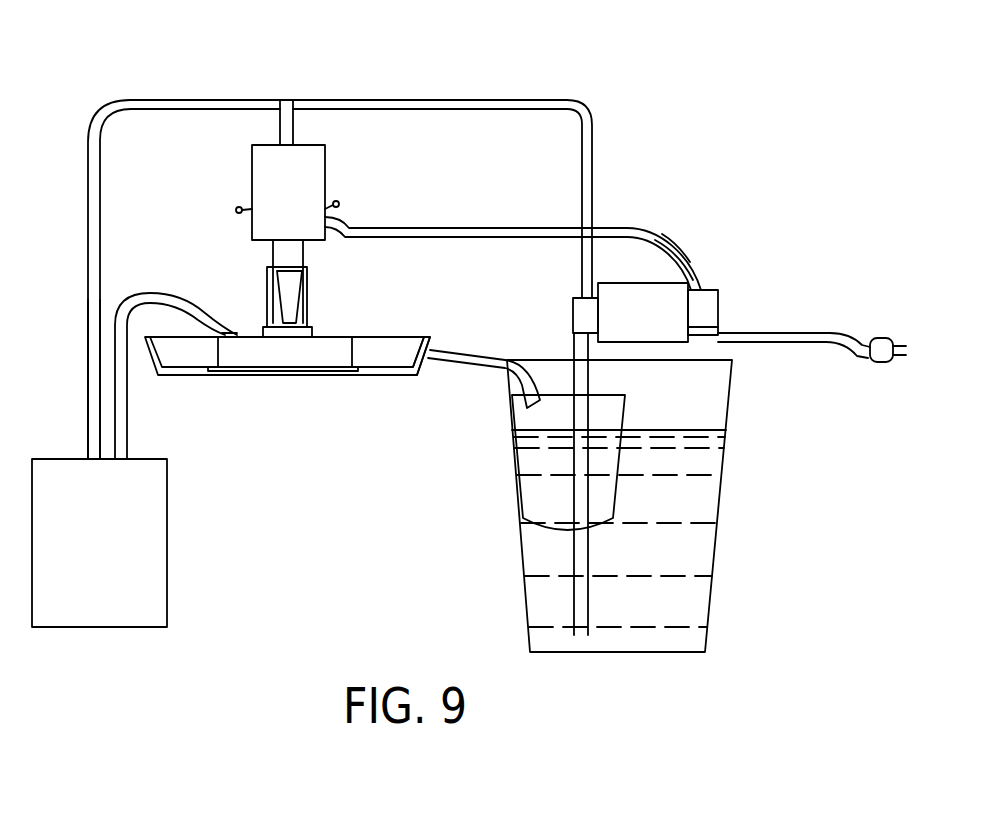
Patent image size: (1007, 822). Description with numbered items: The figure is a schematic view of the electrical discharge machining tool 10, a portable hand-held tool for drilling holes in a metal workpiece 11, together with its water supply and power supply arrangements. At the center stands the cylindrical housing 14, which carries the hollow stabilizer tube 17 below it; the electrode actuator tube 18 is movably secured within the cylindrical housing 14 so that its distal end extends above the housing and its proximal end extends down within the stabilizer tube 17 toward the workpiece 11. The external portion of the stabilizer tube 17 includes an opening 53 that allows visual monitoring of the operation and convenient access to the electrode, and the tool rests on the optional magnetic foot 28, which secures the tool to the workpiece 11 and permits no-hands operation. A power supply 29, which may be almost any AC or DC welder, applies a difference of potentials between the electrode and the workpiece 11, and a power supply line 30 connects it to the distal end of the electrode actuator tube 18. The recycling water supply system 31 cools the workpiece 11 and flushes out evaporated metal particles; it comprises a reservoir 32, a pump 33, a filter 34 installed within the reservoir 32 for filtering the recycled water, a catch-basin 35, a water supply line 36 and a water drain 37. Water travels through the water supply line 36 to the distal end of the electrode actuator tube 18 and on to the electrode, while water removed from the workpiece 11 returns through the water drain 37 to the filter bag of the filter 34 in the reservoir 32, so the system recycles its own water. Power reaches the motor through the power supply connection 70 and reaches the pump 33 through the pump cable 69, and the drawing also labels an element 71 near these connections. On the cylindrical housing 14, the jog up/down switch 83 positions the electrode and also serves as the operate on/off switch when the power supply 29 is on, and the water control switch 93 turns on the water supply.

The electrical discharge machining (EDM) tool 10 is at (125, 43).
The workpiece 11 is at (327, 360).
The cylindrical housing 14 is at (316, 185).
The stabilizer tube 17 is at (278, 254).
The electrode actuator tube 18 is at (288, 100).
The magnetic foot 28 is at (312, 330).
The power supply 29 is at (158, 577).
The power supply line 30 is at (88, 232).
The recycling water supply system 31 is at (657, 166).
The reservoir 32 is at (695, 557).
The pump 33 is at (683, 312).
The filter 34 is at (533, 483).
The catch-basin 35 is at (407, 366).
The water supply line 36 is at (311, 256).
The water drain 37 is at (472, 355).
The opening 53 is at (284, 292).
The pump cable 69 is at (662, 232).
The power supply connection 70 is at (668, 240).
The tube end 71 is at (676, 252).
The jog up/down switch 83 is at (246, 208).
The water control switch 93 is at (340, 205).